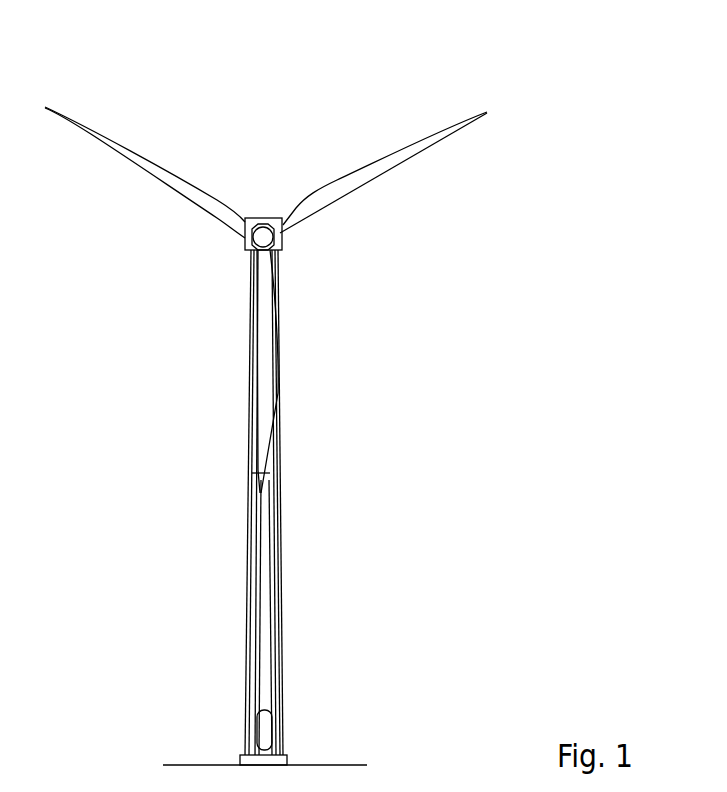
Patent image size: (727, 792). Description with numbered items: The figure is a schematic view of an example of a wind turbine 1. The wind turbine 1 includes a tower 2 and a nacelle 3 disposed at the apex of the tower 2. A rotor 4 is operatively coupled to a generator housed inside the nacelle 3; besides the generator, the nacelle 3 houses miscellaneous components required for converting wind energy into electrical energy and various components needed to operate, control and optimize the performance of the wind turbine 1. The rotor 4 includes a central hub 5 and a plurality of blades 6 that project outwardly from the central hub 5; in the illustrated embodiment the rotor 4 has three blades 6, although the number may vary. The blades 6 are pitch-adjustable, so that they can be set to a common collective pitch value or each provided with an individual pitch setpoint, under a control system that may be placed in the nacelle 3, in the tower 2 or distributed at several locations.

The wind turbine 1 is at (378, 67).
The tower 2 is at (268, 633).
The nacelle 3 is at (243, 245).
The rotor 4 is at (452, 271).
The central hub 5 is at (266, 238).
The blades 6 is at (443, 140).